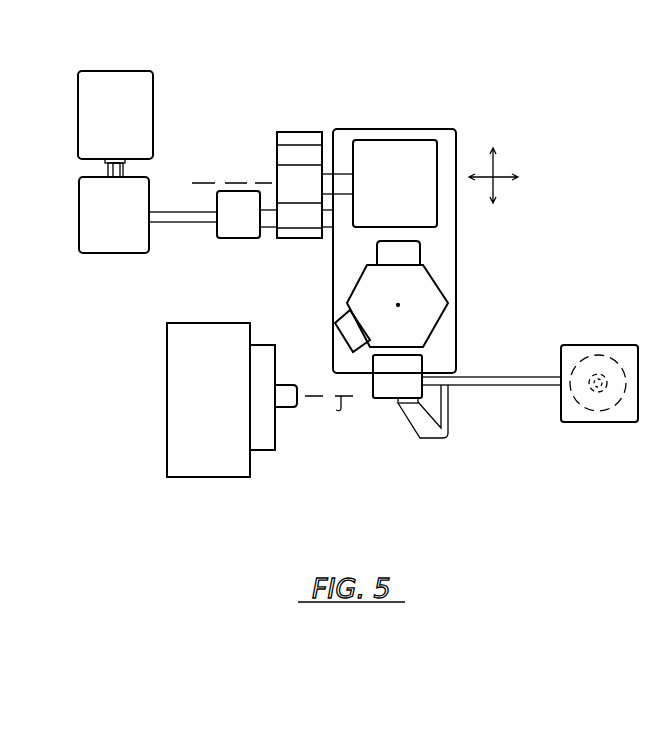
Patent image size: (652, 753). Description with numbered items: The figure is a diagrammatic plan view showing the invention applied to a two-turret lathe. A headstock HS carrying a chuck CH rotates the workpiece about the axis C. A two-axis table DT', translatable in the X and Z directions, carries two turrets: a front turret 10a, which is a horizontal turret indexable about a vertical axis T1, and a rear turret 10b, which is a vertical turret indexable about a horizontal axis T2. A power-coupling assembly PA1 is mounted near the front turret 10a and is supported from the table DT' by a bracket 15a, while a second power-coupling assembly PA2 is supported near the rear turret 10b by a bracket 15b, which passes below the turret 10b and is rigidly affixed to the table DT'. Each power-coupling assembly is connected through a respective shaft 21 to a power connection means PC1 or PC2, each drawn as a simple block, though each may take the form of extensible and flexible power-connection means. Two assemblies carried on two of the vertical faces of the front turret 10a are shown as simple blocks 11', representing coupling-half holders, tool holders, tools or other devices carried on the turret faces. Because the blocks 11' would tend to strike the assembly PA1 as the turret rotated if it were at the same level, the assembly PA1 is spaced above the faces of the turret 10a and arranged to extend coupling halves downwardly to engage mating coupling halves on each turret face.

The power connection means PC2 is at (118, 254).
The shaft 21 is at (197, 224).
The power-coupling assembly PA2 is at (238, 240).
The horizontal axis T2 is at (230, 182).
The bracket 15b is at (328, 229).
The rear turret 10b is at (292, 131).
The two-axis table DT' is at (433, 251).
The blocks 11' is at (354, 279).
The front turret 10a is at (445, 296).
The vertical axis T1 is at (398, 306).
The power-coupling assembly PA1 is at (393, 400).
The bracket 15a is at (443, 440).
The power connection means PC1 is at (600, 423).
The headstock HS is at (177, 478).
The chuck CH is at (268, 452).
The axis C is at (338, 410).
The X direction X is at (492, 166).
The Z direction Z is at (502, 180).